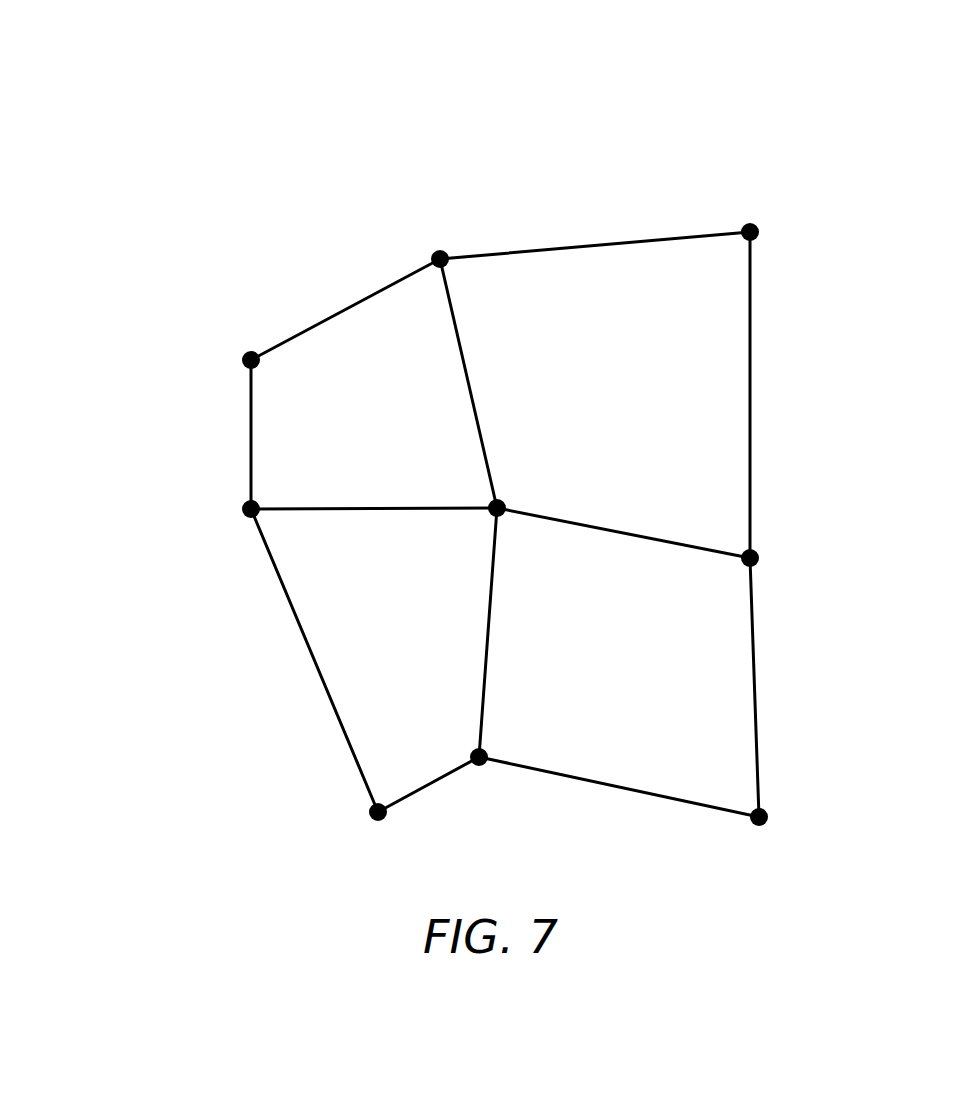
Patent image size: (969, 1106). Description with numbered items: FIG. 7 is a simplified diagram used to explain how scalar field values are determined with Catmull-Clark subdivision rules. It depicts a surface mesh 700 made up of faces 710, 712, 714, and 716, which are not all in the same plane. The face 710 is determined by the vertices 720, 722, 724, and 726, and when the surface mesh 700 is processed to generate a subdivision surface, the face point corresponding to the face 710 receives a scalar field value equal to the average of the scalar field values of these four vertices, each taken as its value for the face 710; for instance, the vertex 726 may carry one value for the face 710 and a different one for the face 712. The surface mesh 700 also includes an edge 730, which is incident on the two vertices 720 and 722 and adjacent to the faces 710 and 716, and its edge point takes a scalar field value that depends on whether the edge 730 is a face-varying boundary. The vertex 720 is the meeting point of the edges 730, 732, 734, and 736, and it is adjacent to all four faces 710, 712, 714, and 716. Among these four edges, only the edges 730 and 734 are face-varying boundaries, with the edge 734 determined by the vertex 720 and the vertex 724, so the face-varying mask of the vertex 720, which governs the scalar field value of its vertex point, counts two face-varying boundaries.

The surface mesh 700 is at (75, 49).
The face 710 is at (595, 217).
The face 712 is at (796, 687).
The face 714 is at (303, 660).
The face 716 is at (337, 309).
The vertex 720 is at (541, 488).
The vertex 722 is at (403, 233).
The vertex 724 is at (657, 515).
The vertex 726 is at (809, 543).
The edge 730 is at (507, 383).
The edge 732 is at (374, 538).
The edge 734 is at (535, 632).
The edge 736 is at (623, 520).